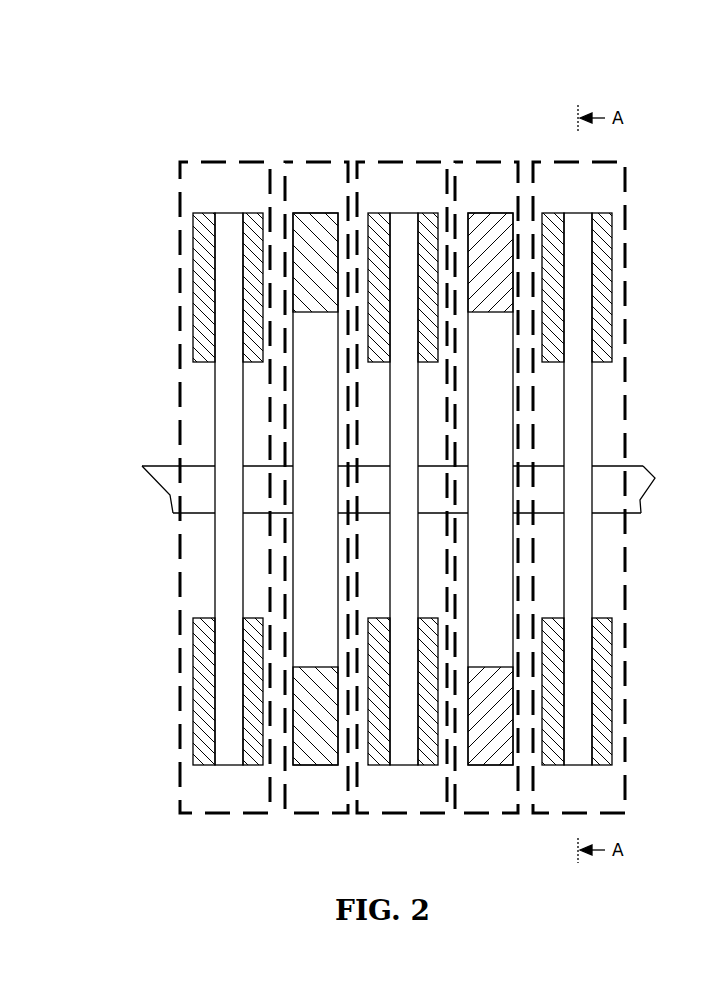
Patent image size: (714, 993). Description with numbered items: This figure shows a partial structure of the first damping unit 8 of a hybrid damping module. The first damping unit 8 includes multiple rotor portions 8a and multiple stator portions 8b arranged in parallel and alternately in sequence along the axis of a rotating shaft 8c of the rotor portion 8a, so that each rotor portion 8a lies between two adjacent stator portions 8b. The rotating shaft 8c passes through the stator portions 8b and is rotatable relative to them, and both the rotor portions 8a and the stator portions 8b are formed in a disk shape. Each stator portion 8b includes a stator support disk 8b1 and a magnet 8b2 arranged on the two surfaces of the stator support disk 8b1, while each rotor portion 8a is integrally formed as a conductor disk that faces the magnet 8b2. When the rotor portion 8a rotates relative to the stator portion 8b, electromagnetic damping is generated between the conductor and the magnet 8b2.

The first damping unit 8 is at (405, 33).
The rotor portion 8a is at (318, 213).
The stator portion 8b is at (95, 328).
The stator support disk 8b1 is at (216, 370).
The magnet 8b2 is at (195, 288).
The rotating shaft 8c is at (178, 462).